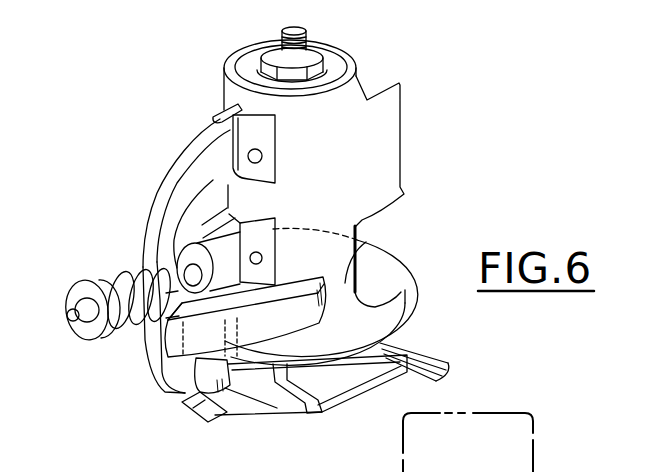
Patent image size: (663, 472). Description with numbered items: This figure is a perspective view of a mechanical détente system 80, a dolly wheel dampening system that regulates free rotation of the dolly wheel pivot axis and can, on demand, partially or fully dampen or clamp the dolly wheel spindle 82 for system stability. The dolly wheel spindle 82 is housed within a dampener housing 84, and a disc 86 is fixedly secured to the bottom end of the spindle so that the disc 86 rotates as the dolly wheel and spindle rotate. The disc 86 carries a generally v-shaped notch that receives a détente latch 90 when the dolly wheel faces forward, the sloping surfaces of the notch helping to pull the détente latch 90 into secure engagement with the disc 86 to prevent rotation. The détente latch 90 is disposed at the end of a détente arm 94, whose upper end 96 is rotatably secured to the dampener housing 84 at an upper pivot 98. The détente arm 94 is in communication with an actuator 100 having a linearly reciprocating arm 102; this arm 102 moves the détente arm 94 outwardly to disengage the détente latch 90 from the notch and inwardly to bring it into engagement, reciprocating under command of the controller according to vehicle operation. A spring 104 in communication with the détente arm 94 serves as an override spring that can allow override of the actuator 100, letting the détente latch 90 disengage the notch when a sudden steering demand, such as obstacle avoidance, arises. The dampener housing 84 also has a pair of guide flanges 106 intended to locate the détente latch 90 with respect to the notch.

The mechanical détente system 80 is at (108, 262).
The dolly wheel spindle 82 is at (310, 43).
The dampener housing 84 is at (388, 142).
The disc 86 is at (390, 293).
The détente latch 90 is at (200, 412).
The détente arm 94 is at (187, 190).
The upper end 96 is at (227, 108).
The upper pivot 98 is at (265, 134).
The actuator 100 is at (242, 222).
The linearly reciprocating arm 102 is at (279, 280).
The spring 104 is at (133, 331).
The guide flanges 106 is at (333, 273).